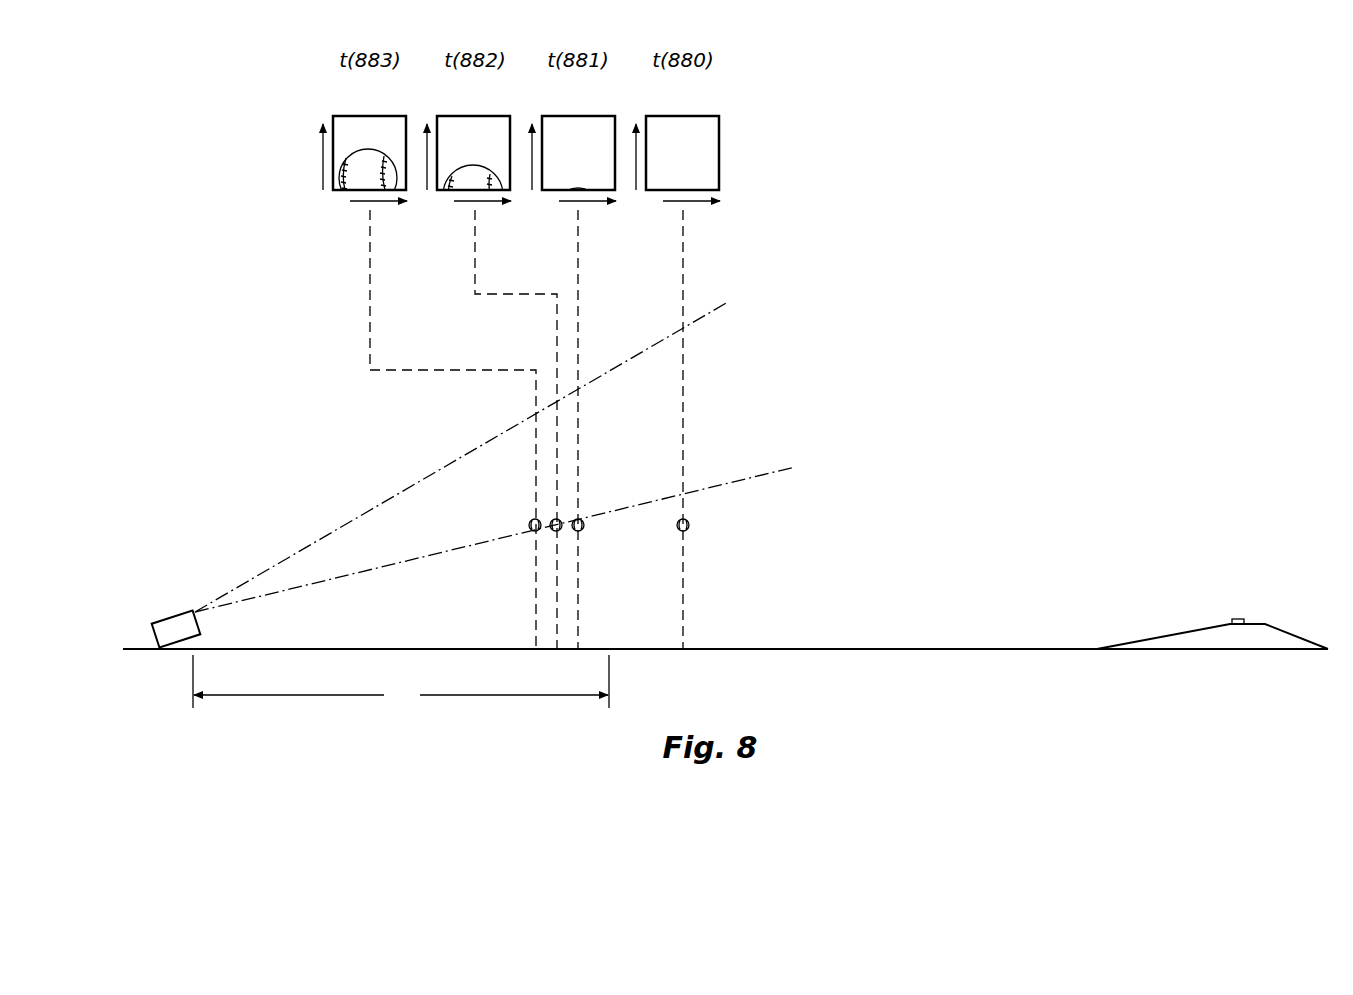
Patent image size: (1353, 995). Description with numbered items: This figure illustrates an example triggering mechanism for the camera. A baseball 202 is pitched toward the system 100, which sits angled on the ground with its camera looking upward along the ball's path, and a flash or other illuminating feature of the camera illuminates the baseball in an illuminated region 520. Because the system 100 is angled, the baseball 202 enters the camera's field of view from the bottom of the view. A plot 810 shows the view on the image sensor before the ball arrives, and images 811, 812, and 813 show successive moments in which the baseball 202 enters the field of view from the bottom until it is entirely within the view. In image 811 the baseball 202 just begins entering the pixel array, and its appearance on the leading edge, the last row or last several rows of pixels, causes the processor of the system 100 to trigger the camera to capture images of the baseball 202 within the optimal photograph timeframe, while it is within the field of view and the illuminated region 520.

The system 100 is at (168, 620).
The baseball 202 is at (584, 529).
The illuminated region 520 is at (401, 681).
The plot 810 is at (659, 116).
The image 811 is at (555, 116).
The image 812 is at (450, 116).
The image 813 is at (346, 116).